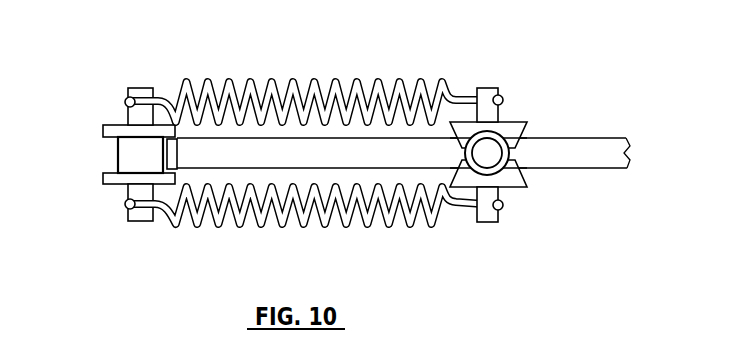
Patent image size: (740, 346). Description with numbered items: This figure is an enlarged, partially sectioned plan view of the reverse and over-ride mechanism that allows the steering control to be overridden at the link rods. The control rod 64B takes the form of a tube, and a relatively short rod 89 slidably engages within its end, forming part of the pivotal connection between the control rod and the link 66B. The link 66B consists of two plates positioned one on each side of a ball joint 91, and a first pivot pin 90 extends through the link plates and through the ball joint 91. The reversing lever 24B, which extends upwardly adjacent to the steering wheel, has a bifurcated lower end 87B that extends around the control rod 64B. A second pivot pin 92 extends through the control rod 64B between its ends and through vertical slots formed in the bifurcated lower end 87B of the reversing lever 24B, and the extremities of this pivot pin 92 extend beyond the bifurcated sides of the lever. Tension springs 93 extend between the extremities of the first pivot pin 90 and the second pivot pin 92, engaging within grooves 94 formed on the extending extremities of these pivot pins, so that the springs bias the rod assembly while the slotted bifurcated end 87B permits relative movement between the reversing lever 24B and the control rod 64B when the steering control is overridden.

The reversing lever 24B is at (523, 137).
The control rod 64B is at (598, 163).
The link 66B is at (105, 177).
The bifurcated lower end 87B is at (511, 137).
The short rod 89 is at (330, 138).
The first pivot pin 90 is at (128, 221).
The ball joint 91 is at (118, 153).
The second pivot pin 92 is at (503, 200).
The tension spring 93 is at (433, 237).
The groove 94 is at (127, 100).